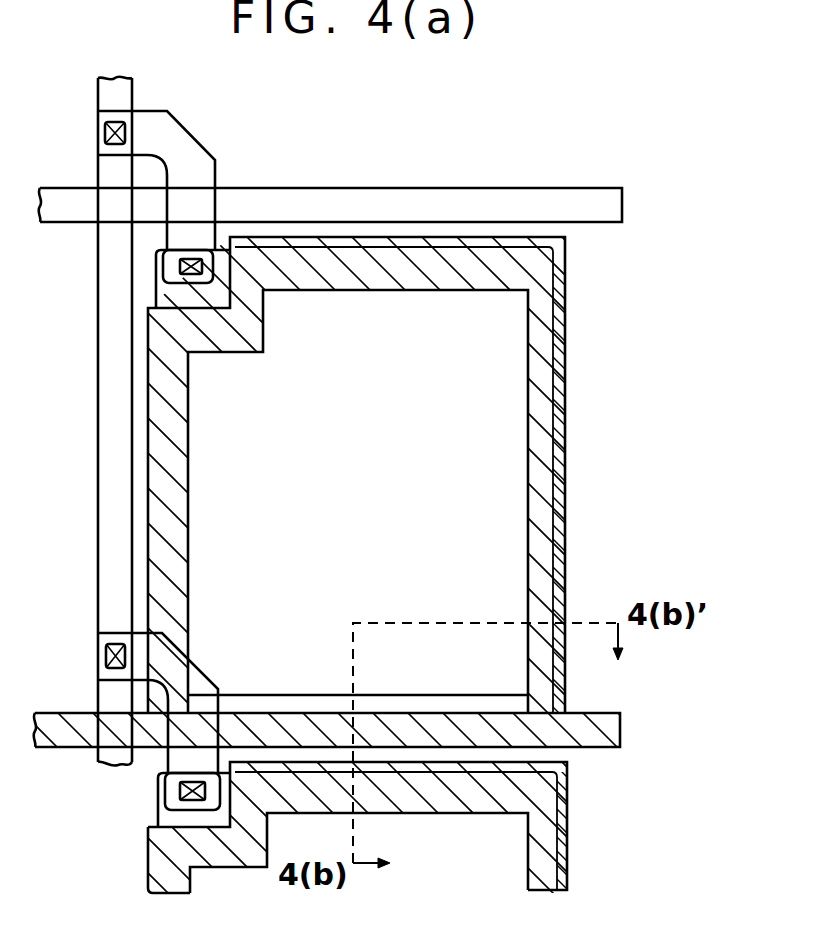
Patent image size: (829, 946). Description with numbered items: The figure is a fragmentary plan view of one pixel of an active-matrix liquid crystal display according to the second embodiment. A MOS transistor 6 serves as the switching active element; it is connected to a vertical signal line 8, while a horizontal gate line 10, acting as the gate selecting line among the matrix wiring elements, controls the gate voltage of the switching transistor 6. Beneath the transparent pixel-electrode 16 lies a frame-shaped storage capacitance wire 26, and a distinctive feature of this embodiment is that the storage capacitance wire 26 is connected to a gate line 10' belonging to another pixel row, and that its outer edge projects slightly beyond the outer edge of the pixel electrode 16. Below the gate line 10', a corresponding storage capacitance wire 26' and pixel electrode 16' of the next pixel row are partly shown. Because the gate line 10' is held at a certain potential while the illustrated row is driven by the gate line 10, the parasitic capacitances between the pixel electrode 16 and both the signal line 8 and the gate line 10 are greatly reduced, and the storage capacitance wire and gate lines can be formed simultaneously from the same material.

The MOS transistor 6 is at (225, 165).
The signal line 8 is at (112, 457).
The gate line 10 is at (330, 175).
The gate line belonging to another pixel row 10' is at (414, 473).
The transparent pixel-electrode 16 is at (431, 675).
The transparent pixel-electrode of another pixel row 16' is at (581, 851).
The storage capacitance wire 26 is at (414, 473).
The storage capacitance wire of another pixel row 26' is at (414, 473).